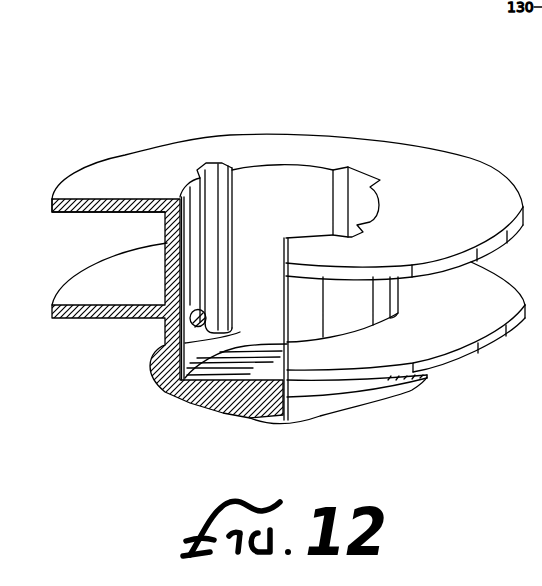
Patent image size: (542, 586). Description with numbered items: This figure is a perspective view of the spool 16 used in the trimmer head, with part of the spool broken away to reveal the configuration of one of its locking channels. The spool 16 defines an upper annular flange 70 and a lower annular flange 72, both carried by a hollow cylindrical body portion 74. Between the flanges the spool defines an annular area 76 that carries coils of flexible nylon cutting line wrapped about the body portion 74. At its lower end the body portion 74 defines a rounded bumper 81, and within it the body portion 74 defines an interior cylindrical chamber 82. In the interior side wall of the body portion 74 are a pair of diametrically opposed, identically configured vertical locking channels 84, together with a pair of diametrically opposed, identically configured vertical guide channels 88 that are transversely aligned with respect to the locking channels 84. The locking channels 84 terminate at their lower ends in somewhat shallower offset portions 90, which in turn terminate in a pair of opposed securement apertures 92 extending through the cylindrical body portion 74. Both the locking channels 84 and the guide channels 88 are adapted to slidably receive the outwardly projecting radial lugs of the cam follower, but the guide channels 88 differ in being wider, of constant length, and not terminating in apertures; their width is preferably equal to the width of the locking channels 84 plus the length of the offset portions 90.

The spool 16 is at (276, 242).
The upper annular flange 70 is at (125, 158).
The lower annular flange 72 is at (75, 320).
The hollow cylindrical body portion 74 is at (165, 238).
The annular area 76 is at (60, 236).
The rounded bumper 81 is at (290, 423).
The interior cylindrical chamber 82 is at (300, 181).
The vertical locking channels 84 is at (203, 167).
The vertical guide channels 88 is at (371, 173).
The offset portions 90 is at (240, 332).
The securement apertures 92 is at (194, 327).